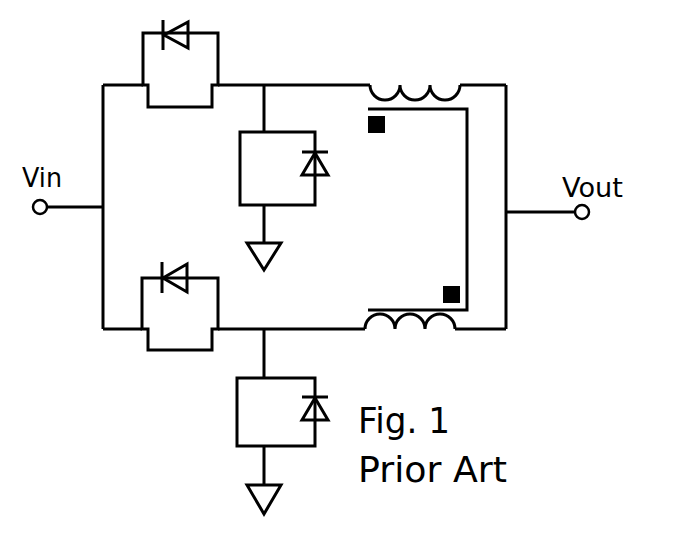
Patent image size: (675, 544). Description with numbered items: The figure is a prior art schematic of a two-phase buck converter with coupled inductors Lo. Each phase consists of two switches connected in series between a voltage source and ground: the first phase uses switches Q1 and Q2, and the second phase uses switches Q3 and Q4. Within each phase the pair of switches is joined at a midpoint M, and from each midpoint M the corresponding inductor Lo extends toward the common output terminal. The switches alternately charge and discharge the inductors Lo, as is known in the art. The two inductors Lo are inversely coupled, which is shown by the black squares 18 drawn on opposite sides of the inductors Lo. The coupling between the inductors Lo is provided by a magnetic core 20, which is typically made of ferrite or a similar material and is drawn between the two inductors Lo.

The black squares 18 is at (377, 134).
The magnetic core 20 is at (467, 212).
The switch Q1 is at (180, 63).
The switch Q2 is at (284, 201).
The switch Q3 is at (180, 306).
The switch Q4 is at (282, 446).
The coupled inductors Lo is at (394, 93).
The midpoint M is at (266, 85).